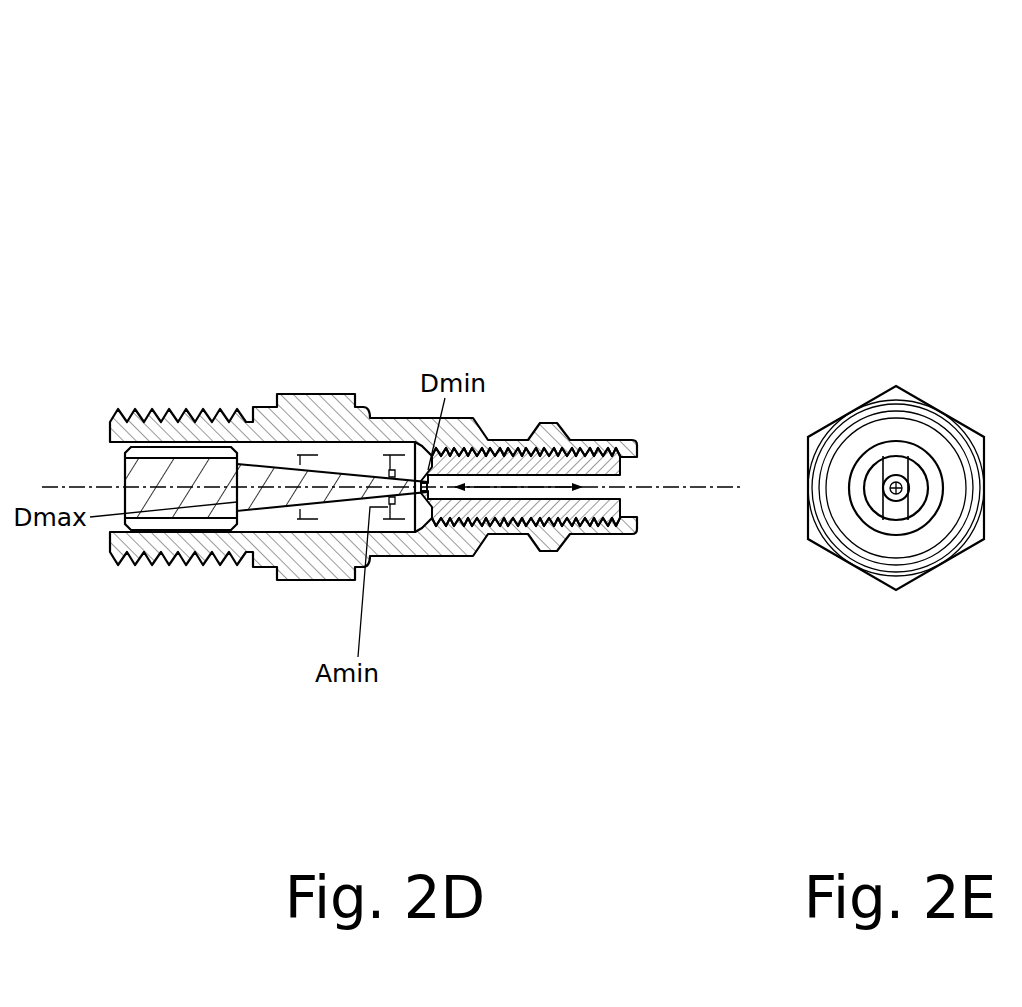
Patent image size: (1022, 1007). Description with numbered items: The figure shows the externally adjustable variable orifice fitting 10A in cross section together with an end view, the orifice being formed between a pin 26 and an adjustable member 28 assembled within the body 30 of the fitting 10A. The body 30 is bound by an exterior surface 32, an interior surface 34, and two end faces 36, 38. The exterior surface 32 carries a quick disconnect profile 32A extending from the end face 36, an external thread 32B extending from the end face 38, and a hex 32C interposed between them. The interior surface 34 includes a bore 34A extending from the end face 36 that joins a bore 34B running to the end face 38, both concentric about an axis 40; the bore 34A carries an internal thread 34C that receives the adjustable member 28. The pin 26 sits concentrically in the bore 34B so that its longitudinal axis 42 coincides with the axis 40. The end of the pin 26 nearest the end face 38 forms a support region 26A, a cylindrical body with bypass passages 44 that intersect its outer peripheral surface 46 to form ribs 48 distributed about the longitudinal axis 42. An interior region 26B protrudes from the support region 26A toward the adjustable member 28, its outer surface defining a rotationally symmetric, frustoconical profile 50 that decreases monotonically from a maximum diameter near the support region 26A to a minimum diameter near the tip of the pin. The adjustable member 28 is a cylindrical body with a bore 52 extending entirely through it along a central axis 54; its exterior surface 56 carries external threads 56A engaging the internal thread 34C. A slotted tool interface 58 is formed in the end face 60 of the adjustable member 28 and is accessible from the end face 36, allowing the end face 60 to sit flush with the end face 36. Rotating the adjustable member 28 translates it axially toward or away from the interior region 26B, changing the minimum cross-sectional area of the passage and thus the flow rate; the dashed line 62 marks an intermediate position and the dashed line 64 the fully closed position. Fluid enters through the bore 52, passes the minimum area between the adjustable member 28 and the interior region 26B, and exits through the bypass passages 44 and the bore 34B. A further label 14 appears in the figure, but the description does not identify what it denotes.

In FIG. 2D, the fitting 10A is at (570, 143).
In FIG. 2D, the body 14 is at (592, 328).
In FIG. 2E, the body 14 is at (896, 488).
In FIG. 2D, the pin 26 is at (160, 465).
In FIG. 2D, the support region 26A is at (125, 532).
In FIG. 2D, the interior region 26B is at (430, 560).
In FIG. 2D, the adjustable member 28 is at (495, 463).
In FIG. 2E, the adjustable member 28 is at (915, 472).
In FIG. 2D, the body 30 is at (485, 305).
In FIG. 2D, the exterior surface 32 is at (373, 410).
In FIG. 2D, the quick disconnect profile 32A is at (635, 438).
In FIG. 2D, the external thread 32B is at (114, 392).
In FIG. 2D, the hex 32C is at (356, 392).
In FIG. 2D, the interior surface 34 is at (537, 503).
In FIG. 2D, the bore 34A is at (674, 405).
In FIG. 2D, the bore 34B is at (344, 440).
In FIG. 2D, the internal thread 34C is at (603, 455).
In FIG. 2D, the end face 36 is at (637, 523).
In FIG. 2E, the end face 36 is at (935, 518).
In FIG. 2D, the end face 38 is at (108, 428).
In FIG. 2D, the axis 40 is at (373, 445).
In FIG. 2E, the axis 40 is at (823, 560).
In FIG. 2D, the longitudinal axis 42 is at (58, 483).
In FIG. 2D, the bypass passages 44 is at (230, 450).
In FIG. 2D, the outer peripheral surface 46 is at (146, 430).
In FIG. 2D, the ribs 48 is at (200, 455).
In FIG. 2D, the profile 50 is at (357, 470).
In FIG. 2D, the bore 52 is at (594, 503).
In FIG. 2E, the bore 52 is at (892, 460).
In FIG. 2D, the axis 54 is at (741, 480).
In FIG. 2E, the axis 54 is at (887, 500).
In FIG. 2D, the exterior surface 56 is at (572, 405).
In FIG. 2D, the external threads 56A is at (543, 452).
In FIG. 2D, the tool interface 58 is at (630, 465).
In FIG. 2E, the tool interface 58 is at (897, 515).
In FIG. 2D, the end face 60 is at (640, 508).
In FIG. 2E, the end face 60 is at (912, 510).
In FIG. 2D, the dashed line 62 is at (402, 517).
In FIG. 2D, the dashed line 64 is at (312, 518).